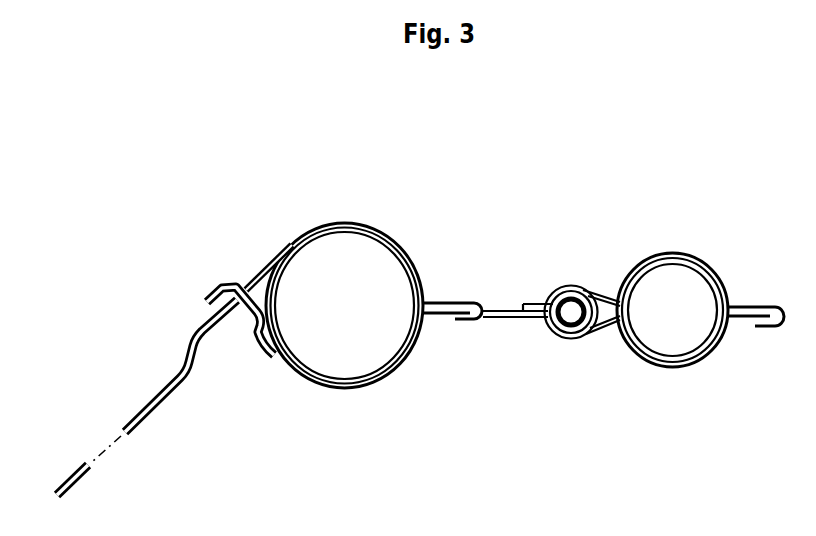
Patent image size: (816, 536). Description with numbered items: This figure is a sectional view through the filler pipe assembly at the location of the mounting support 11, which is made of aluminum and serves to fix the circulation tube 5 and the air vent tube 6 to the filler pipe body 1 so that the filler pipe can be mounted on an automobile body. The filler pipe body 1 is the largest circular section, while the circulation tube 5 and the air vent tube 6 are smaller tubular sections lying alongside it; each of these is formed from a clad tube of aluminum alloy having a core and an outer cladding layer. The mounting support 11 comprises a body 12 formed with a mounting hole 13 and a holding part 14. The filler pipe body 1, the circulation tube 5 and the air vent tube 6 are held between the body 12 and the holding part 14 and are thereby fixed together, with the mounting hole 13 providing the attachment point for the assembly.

The filler pipe body 1 is at (253, 285).
The circulation tube 5 is at (608, 326).
The air vent tube 6 is at (703, 345).
The mounting support 11 is at (106, 331).
The body 12 is at (143, 420).
The mounting hole 13 is at (104, 445).
The holding part 14 is at (332, 392).